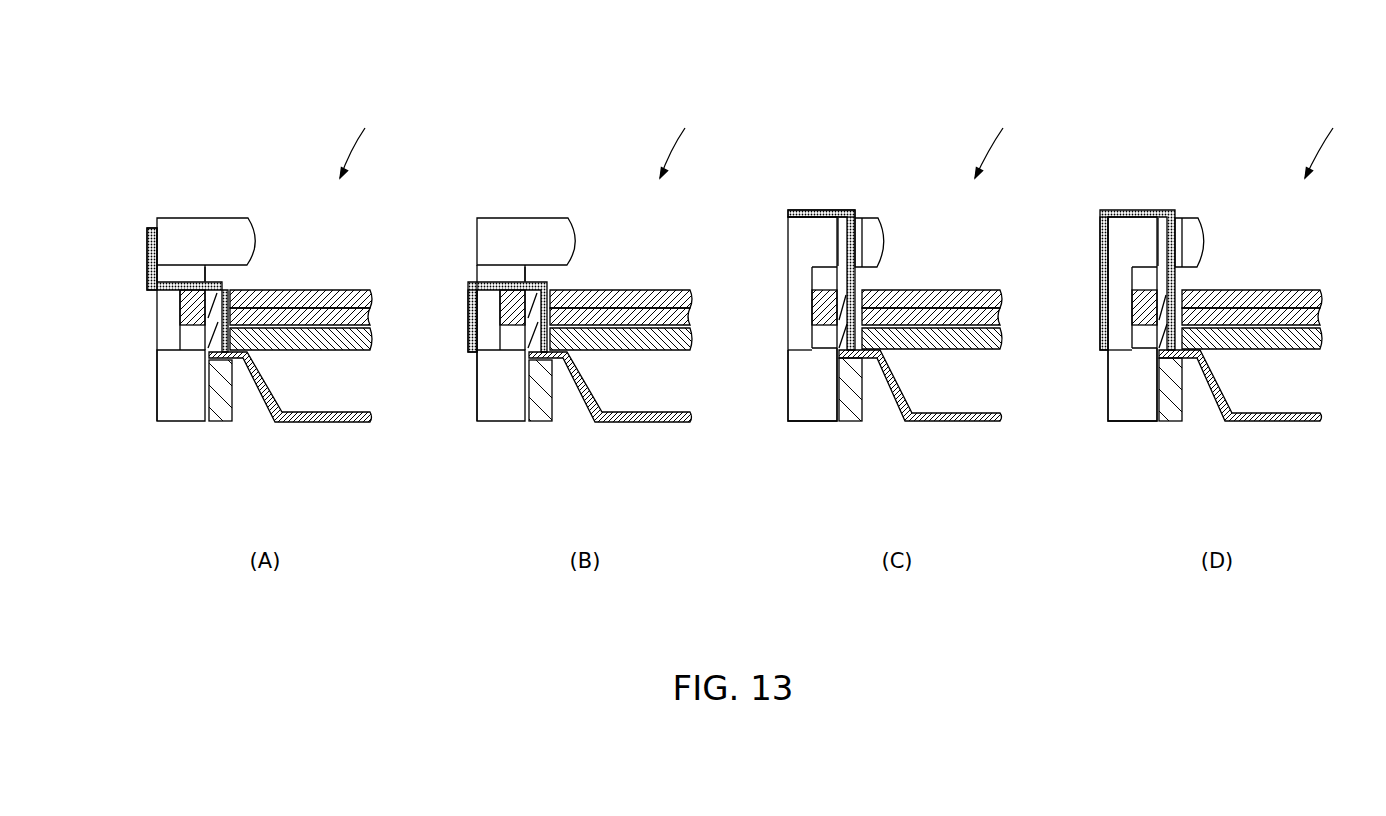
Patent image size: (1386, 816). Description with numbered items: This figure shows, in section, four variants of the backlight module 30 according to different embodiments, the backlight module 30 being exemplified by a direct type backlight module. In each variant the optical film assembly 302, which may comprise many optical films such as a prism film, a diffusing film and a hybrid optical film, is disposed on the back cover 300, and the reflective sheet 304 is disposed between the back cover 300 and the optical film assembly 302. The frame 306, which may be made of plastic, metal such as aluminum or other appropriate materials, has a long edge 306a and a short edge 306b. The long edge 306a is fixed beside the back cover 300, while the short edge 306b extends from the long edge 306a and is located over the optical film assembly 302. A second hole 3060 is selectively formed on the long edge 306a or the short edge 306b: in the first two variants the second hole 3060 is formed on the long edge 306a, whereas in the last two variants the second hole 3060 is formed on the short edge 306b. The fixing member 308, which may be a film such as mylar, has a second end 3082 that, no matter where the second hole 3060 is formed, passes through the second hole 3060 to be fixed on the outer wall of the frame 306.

The backlight module 30 is at (851, 142).
The back cover 300 is at (222, 416).
The optical film assembly 302 is at (368, 300).
The reflective sheet 304 is at (328, 420).
The frame 306 is at (670, 333).
The long edge 306a is at (157, 386).
The short edge 306b is at (205, 218).
The second hole 3060 is at (222, 277).
The fixing member 308 is at (622, 258).
The second end 3082 is at (148, 240).